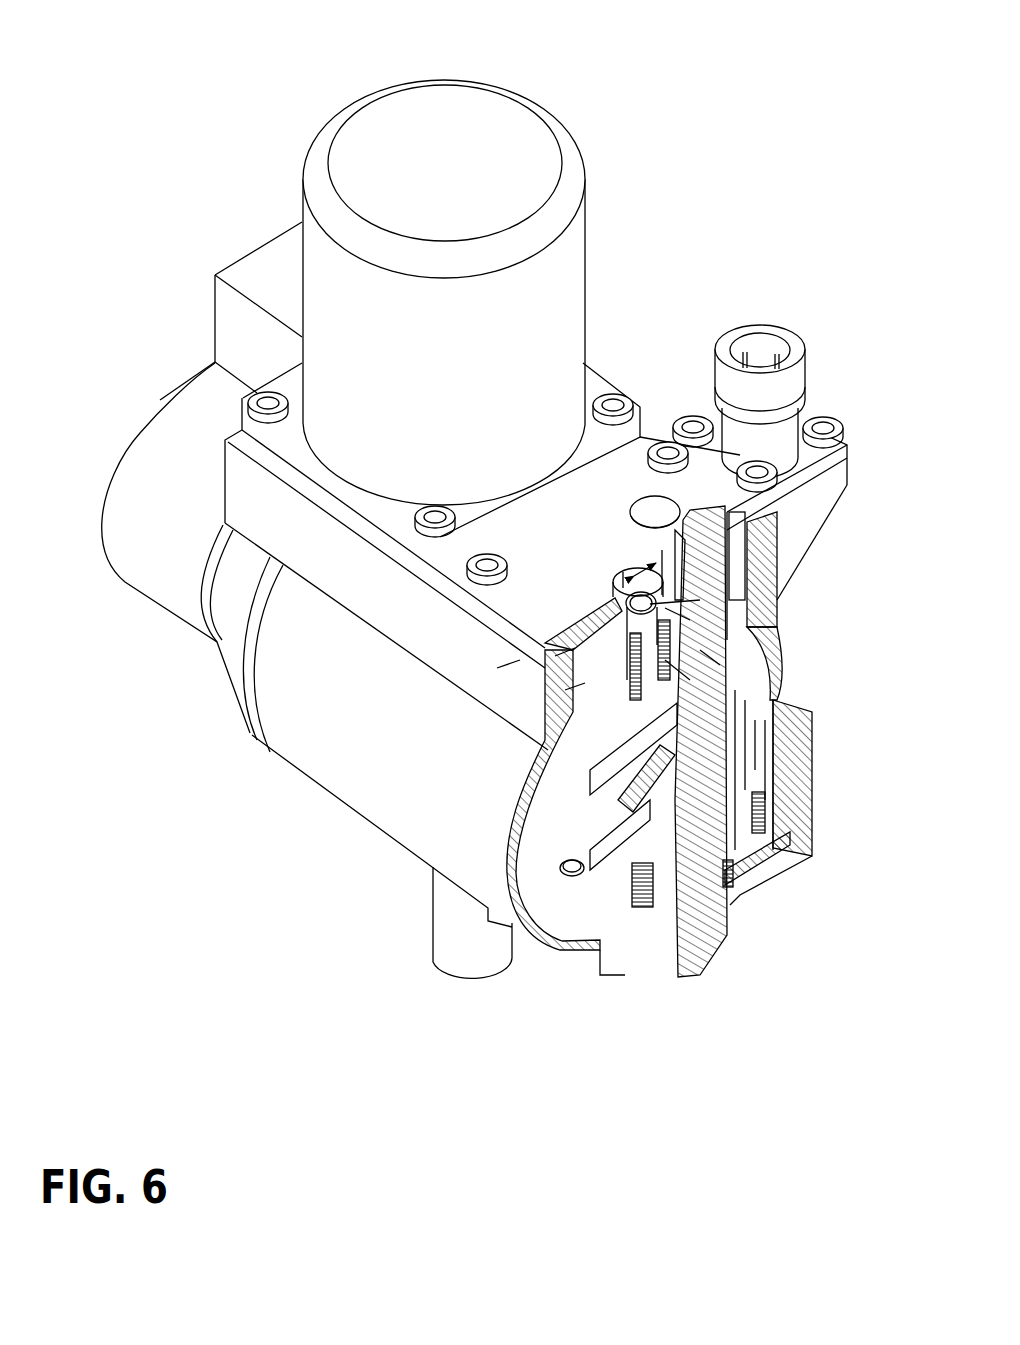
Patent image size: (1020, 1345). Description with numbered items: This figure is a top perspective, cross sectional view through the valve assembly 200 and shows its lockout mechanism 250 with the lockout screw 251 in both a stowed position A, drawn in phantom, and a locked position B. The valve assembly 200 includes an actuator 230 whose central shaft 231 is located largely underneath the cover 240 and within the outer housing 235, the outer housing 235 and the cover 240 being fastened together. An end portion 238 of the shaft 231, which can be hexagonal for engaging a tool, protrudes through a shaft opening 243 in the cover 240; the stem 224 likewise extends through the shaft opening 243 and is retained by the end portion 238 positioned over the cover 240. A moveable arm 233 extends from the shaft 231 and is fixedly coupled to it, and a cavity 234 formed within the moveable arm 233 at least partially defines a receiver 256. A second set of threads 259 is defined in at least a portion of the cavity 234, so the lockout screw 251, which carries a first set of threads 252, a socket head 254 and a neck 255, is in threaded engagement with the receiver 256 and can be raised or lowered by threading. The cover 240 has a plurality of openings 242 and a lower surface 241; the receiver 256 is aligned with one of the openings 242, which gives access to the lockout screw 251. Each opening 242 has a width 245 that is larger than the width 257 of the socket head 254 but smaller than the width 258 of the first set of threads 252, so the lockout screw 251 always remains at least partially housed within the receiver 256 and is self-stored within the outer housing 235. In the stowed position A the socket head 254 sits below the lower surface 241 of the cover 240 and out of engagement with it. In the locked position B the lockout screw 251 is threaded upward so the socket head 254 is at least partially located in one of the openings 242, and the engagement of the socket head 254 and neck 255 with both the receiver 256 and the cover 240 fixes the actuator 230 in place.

The valve assembly 200 is at (475, 495).
The stem 224 is at (757, 756).
The actuator 230 is at (704, 500).
The shaft 231 is at (710, 658).
The moveable arm 233 is at (565, 690).
The cavity 234 is at (548, 627).
The outer housing 235 is at (497, 668).
The end portion 238 is at (735, 528).
The cover 240 is at (523, 542).
The lower surface 241 is at (778, 521).
The openings 242 is at (654, 497).
The shaft opening 243 is at (752, 550).
The width 245 is at (645, 560).
The lockout mechanism 250 is at (585, 724).
The lockout screw 251 is at (650, 604).
The first set of threads 252 is at (733, 673).
The socket head 254 is at (555, 656).
The neck 255 is at (665, 618).
The receiver 256 is at (665, 608).
The width 257 is at (613, 582).
The width 258 is at (672, 662).
The second set of threads 259 is at (775, 723).
The stowed position A is at (605, 720).
The locked position B is at (600, 668).